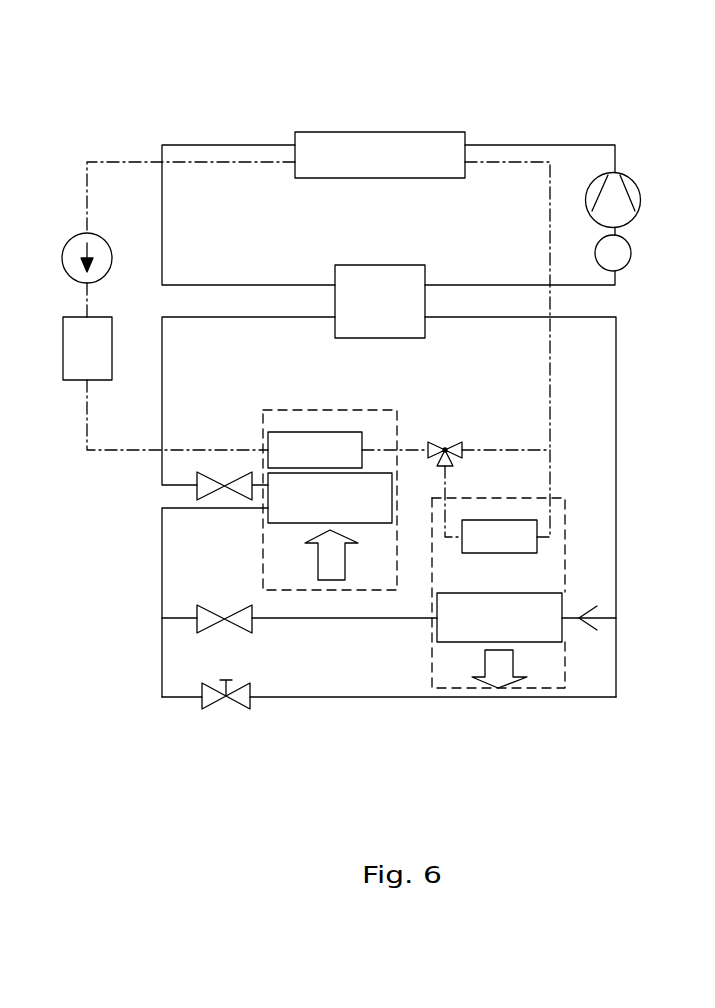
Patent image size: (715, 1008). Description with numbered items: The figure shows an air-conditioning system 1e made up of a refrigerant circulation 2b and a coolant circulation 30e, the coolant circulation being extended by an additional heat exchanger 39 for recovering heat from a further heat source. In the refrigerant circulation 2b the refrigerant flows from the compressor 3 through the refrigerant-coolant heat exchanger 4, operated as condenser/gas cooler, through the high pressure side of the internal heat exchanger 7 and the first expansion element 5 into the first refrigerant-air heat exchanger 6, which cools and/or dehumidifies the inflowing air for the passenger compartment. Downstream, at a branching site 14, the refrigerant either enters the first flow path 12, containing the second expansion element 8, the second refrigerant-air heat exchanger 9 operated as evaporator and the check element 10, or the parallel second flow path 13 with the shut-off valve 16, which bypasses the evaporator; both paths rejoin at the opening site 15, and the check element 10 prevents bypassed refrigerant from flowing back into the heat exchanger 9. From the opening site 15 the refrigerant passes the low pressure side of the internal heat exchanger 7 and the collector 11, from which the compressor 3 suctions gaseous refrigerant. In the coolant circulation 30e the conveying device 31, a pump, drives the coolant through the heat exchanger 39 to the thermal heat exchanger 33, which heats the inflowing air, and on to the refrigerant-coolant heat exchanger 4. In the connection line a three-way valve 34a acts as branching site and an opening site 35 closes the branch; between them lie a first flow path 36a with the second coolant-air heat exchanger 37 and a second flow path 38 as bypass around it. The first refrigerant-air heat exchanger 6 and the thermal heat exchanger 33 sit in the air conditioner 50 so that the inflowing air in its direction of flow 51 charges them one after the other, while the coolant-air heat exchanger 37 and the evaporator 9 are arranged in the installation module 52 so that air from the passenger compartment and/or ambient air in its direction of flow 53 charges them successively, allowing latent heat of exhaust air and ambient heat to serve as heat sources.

The air-conditioning system 1e is at (610, 128).
The refrigerant circulation 2b is at (172, 246).
The compressor 3 is at (614, 186).
The collector 11 is at (618, 254).
The refrigerant-coolant heat exchanger 4 is at (371, 168).
The internal heat exchanger 7 is at (371, 314).
The first expansion element 5 is at (197, 487).
The second expansion element 8 is at (212, 612).
The shut-off valve 16 is at (214, 705).
The branching site 14 is at (164, 616).
The first flow path 12 is at (327, 620).
The second flow path 13 is at (328, 699).
The opening site 15 is at (618, 620).
The check element 10 is at (590, 614).
The coolant circulation 30e is at (78, 183).
The conveying device 31 is at (95, 249).
The heat exchanger 39 is at (73, 359).
The air conditioner 50 is at (353, 410).
The thermal heat exchanger 33 is at (301, 462).
The first refrigerant-air heat exchanger 6 is at (321, 510).
The direction of flow 51 is at (338, 568).
The three-way valve 34a is at (447, 447).
The second flow path 38 is at (505, 446).
The opening site 35 is at (551, 447).
The second coolant-air heat exchanger 37 is at (485, 548).
The first flow path 36a is at (551, 497).
The installation module 52 is at (549, 690).
The second refrigerant-air heat exchanger 9 is at (490, 630).
The direction of flow 53 is at (495, 677).